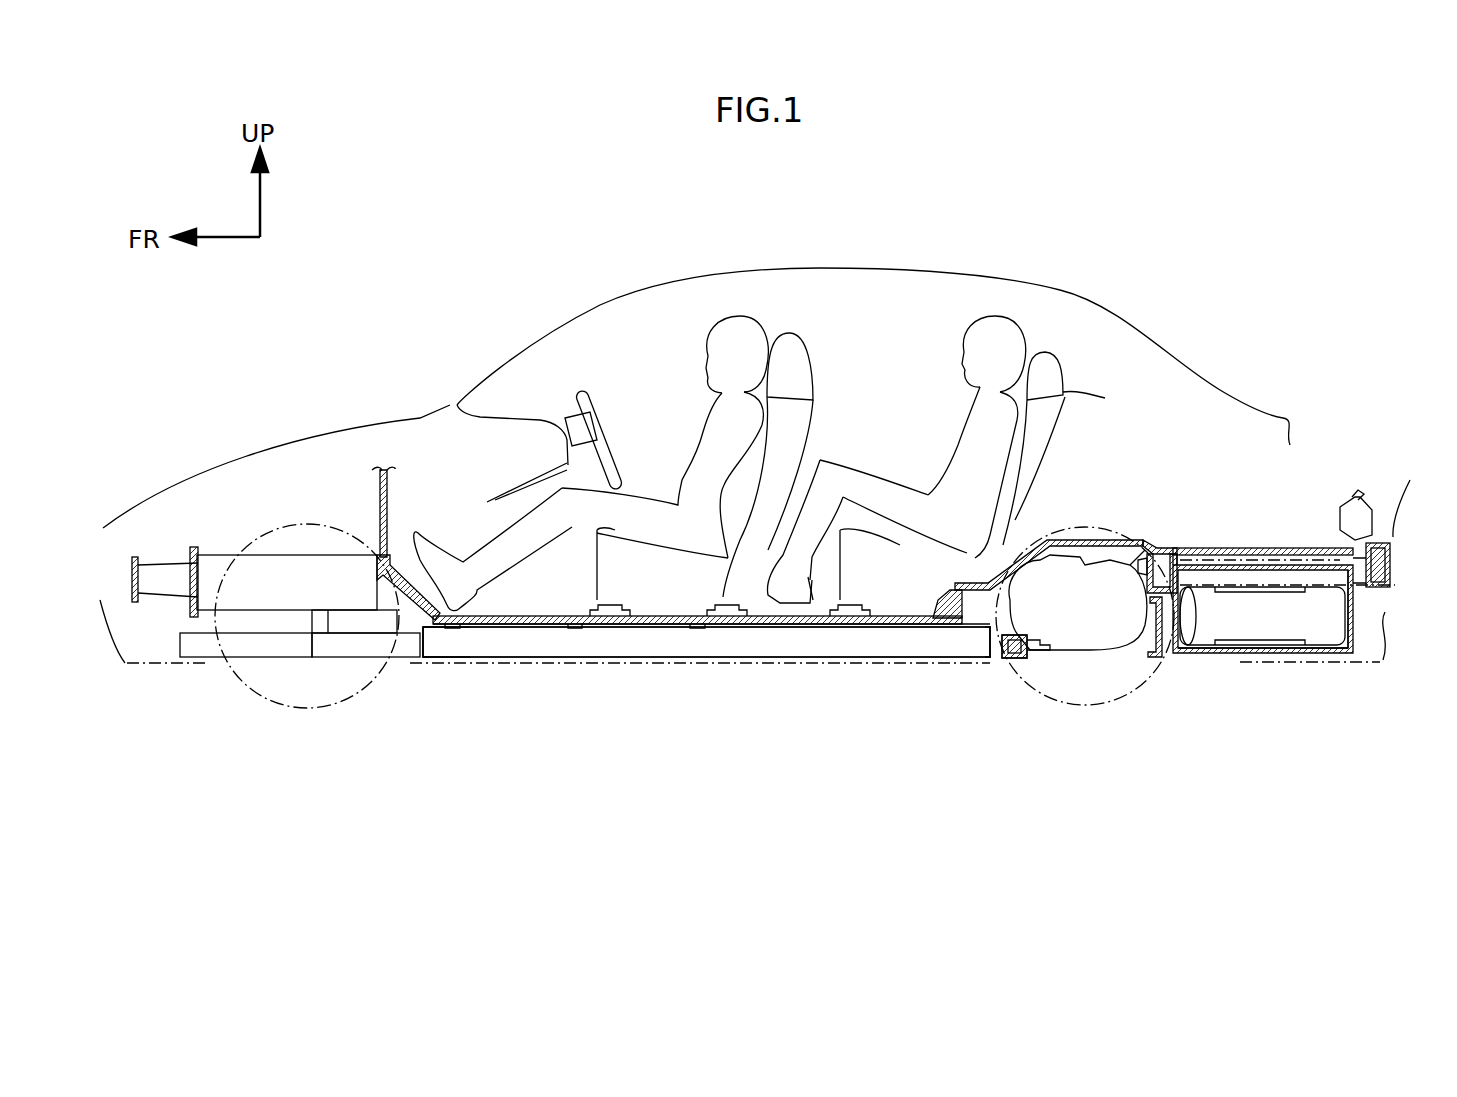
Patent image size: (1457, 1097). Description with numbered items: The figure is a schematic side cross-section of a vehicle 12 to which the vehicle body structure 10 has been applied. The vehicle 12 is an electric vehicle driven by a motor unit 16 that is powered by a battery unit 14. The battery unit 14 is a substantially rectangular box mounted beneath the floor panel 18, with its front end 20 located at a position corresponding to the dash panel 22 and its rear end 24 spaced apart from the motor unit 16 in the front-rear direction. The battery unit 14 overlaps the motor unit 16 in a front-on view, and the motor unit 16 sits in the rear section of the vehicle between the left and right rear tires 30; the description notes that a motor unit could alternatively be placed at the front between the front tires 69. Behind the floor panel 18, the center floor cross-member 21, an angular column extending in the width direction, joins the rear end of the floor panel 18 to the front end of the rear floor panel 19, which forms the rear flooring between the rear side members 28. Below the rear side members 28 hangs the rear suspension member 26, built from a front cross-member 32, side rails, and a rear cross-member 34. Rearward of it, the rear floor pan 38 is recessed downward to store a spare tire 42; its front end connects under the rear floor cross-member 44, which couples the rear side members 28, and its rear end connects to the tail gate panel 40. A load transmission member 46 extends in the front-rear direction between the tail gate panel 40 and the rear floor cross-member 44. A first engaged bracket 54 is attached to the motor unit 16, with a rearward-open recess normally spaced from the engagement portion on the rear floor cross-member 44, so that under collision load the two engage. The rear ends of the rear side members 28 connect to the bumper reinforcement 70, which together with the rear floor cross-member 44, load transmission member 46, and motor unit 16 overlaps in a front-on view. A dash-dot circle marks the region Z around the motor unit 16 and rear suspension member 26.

The vehicle body structure 10 is at (1164, 526).
The vehicle 12 is at (981, 236).
The battery unit 14 is at (848, 648).
The motor unit 16 is at (1088, 652).
The floor panel 18 is at (765, 626).
The rear floor panel 19 is at (1084, 540).
The front end 20 is at (437, 648).
The center floor cross-member 21 is at (944, 595).
The dash panel 22 is at (405, 578).
The rear end 24 is at (981, 650).
The rear suspension member 26 is at (1014, 646).
The rear side member 28 is at (1303, 547).
The rear tire 30 is at (1116, 706).
The front cross-member 32 is at (1010, 660).
The rear cross-member 34 is at (1168, 655).
The rear floor pan 38 is at (1225, 660).
The tail gate panel 40 is at (1355, 603).
The spare tire 42 is at (1318, 632).
The rear floor cross-member 44 is at (1148, 548).
The load transmission member 46 is at (1237, 548).
The first engaged bracket 54 is at (1115, 548).
The front tire 69 is at (315, 708).
The bumper reinforcement 70 is at (1383, 543).
The region Z is at (1160, 672).